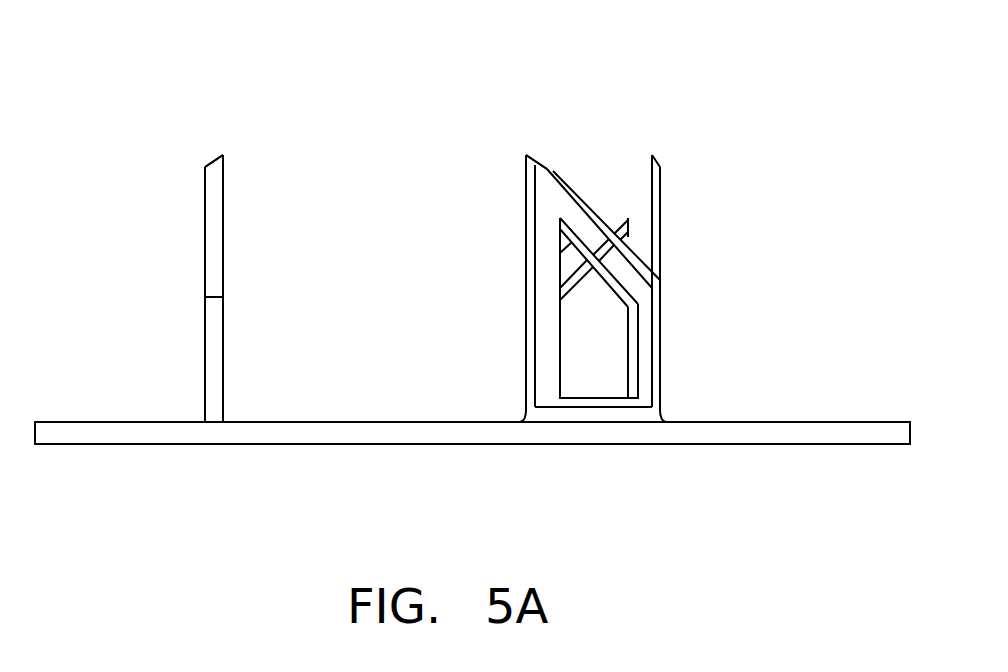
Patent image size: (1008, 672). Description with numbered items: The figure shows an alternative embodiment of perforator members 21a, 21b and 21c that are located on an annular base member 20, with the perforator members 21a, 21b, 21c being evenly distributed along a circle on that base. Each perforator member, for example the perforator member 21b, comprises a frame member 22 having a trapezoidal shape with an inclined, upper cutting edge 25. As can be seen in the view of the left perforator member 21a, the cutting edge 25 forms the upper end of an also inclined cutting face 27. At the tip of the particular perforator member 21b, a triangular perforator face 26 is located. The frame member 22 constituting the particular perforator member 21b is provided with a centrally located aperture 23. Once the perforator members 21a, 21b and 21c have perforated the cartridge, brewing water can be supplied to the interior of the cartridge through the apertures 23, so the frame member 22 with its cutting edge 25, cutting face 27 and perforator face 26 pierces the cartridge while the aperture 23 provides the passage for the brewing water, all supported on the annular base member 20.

The annular base member 20 is at (825, 422).
The perforator member 21a is at (150, 300).
The perforator member 21b is at (470, 355).
The perforator member 21c is at (705, 168).
The frame member 22 is at (650, 358).
The aperture 23 is at (593, 375).
The cutting edge 25 is at (592, 168).
The perforator face 26 is at (527, 100).
The cutting face 27 is at (211, 100).